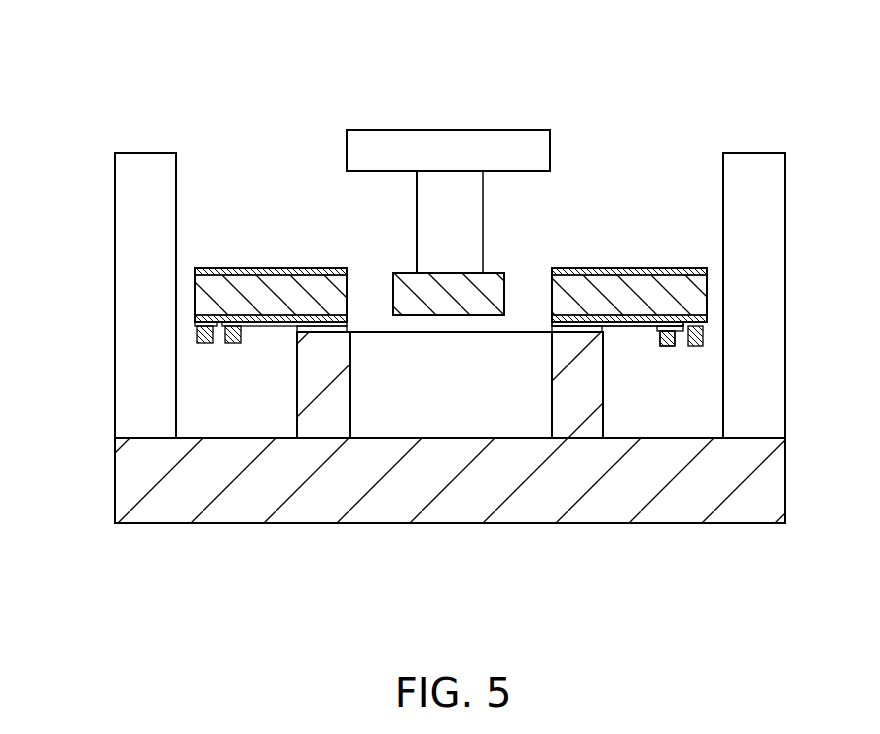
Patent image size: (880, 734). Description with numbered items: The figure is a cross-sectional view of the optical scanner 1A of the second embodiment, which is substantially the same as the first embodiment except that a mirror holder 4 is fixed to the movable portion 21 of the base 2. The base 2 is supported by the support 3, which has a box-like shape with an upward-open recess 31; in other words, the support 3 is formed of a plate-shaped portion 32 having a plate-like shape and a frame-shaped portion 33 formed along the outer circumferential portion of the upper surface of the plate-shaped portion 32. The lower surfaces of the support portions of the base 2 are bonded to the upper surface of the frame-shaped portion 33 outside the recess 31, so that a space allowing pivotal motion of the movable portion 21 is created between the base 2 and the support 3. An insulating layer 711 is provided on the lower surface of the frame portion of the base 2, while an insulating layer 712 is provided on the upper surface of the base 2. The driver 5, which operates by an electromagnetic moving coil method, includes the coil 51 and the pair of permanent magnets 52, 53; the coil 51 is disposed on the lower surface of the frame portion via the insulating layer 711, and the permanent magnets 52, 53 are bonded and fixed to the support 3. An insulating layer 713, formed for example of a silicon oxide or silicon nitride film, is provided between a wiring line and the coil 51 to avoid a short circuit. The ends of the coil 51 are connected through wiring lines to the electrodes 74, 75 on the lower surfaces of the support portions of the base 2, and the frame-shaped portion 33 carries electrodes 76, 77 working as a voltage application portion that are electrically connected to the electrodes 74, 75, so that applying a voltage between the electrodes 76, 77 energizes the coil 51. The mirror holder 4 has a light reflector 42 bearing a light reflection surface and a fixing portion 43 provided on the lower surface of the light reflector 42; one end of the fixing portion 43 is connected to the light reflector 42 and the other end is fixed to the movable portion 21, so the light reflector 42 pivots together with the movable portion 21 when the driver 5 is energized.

The optical scanner 1A is at (660, 103).
The base 2 is at (276, 282).
The movable portion 21 is at (393, 298).
The support 3 is at (450, 460).
The recess 31 is at (427, 417).
The plate-shaped portion 32 is at (522, 475).
The frame-shaped portion 33 is at (324, 408).
The mirror holder 4 is at (448, 192).
The light reflector 42 is at (510, 130).
The fixing portion 43 is at (428, 190).
The driver 5 is at (450, 295).
The coil 51 is at (197, 333).
The permanent magnet 52 is at (765, 388).
The permanent magnet 53 is at (135, 390).
The electrode 74 is at (553, 324).
The electrode 75 is at (347, 324).
The electrode 76 is at (553, 333).
The electrode 77 is at (350, 333).
The insulating layer 711 is at (553, 322).
The insulating layer 712 is at (630, 268).
The insulating layer 713 is at (652, 331).